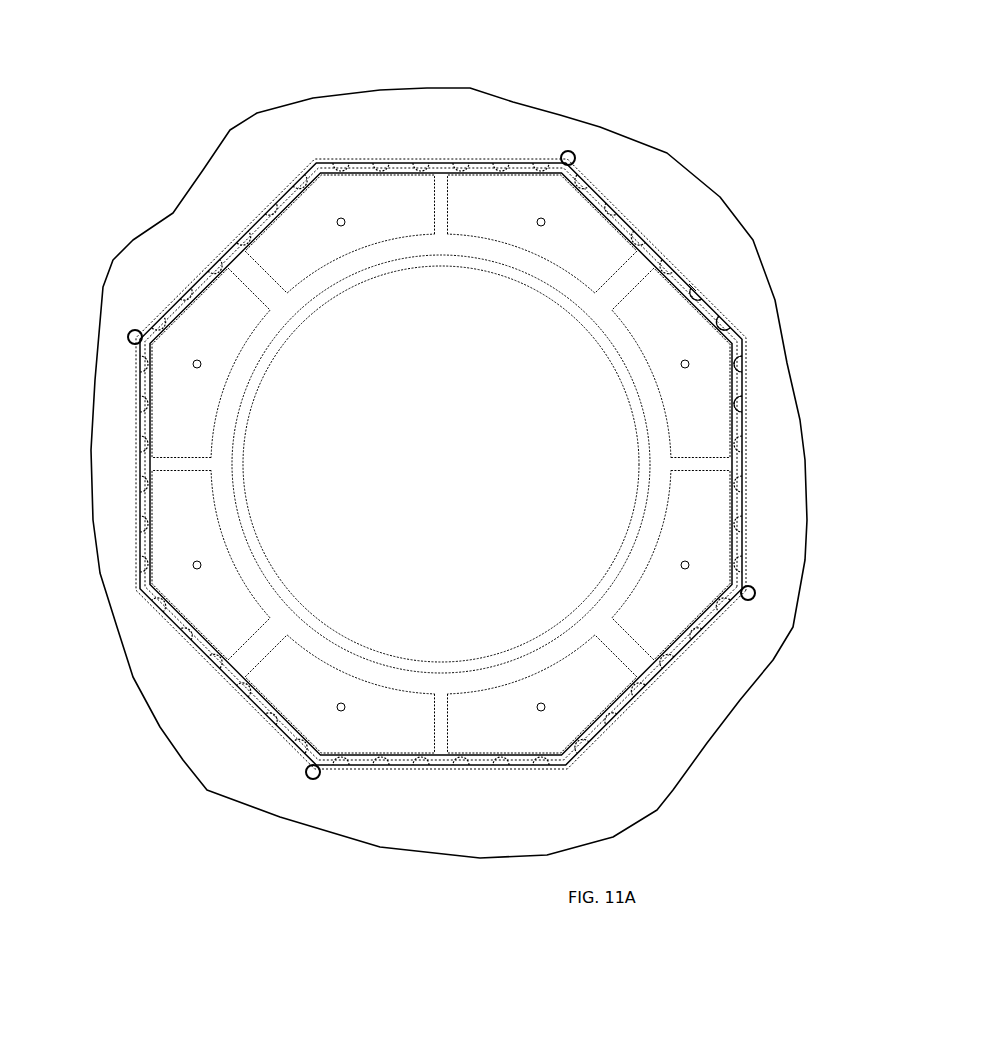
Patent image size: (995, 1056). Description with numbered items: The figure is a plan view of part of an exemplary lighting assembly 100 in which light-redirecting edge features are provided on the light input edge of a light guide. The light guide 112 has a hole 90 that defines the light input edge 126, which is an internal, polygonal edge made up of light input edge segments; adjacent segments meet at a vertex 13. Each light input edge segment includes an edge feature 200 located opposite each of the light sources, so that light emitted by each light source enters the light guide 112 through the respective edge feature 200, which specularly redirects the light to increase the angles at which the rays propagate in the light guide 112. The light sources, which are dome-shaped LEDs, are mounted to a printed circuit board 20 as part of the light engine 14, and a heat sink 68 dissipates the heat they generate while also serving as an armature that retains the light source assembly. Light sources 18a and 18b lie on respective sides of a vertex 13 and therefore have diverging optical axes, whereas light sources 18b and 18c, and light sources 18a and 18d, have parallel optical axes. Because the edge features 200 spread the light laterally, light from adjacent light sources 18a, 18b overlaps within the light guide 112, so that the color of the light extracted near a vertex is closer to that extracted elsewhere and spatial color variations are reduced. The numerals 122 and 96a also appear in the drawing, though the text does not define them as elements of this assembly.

The lighting assembly 100 is at (283, 80).
The light guide 112 is at (545, 118).
The inner layer 122 is at (592, 137).
The light-redirecting edge feature 200 is at (617, 203).
The channel 96a is at (653, 241).
The printed circuit board 20 is at (665, 245).
The light source 18a is at (728, 317).
The light source 18b is at (747, 360).
The light source 18c is at (745, 402).
The light source 18d is at (702, 287).
The vertex 13 is at (743, 340).
The light input edge 126 is at (692, 287).
The heat sink 68 is at (370, 237).
The hole 90 is at (441, 464).
The light engine 14 is at (437, 772).